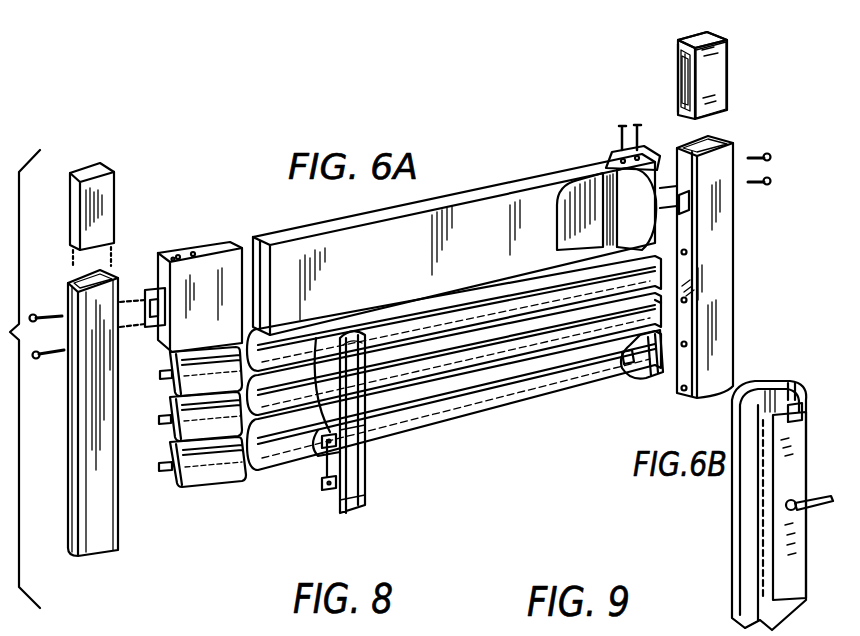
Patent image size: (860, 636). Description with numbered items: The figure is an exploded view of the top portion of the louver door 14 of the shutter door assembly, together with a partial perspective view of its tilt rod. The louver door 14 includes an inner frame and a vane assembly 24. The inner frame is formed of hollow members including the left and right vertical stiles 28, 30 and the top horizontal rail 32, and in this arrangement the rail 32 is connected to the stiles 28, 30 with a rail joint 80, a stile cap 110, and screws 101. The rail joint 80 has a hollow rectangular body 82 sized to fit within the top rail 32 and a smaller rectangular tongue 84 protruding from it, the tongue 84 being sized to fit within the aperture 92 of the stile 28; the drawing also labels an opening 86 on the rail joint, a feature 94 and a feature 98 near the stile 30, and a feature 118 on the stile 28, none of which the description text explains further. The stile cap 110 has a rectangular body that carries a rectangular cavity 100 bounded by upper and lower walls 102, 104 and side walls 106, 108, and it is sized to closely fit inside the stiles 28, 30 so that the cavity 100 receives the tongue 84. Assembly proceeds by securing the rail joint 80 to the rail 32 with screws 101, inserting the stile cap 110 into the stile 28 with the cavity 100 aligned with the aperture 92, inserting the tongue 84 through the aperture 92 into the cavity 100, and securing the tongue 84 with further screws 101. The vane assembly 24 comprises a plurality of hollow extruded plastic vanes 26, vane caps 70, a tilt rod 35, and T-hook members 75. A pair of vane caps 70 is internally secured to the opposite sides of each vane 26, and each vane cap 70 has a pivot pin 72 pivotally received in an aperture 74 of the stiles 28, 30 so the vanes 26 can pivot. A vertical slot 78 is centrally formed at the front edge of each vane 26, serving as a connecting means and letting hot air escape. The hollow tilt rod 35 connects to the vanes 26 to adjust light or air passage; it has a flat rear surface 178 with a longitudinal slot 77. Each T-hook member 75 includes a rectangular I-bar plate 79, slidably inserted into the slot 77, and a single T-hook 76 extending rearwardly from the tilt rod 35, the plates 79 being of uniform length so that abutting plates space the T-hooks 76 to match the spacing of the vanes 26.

In FIG. 6A, the louver door 14 is at (237, 186).
In FIG. 6A, the vane assembly 24 is at (461, 434).
In FIG. 6A, the vane 26 is at (601, 340).
In FIG. 6A, the left vertical stile 28 is at (95, 485).
In FIG. 6A, the right vertical stile 30 is at (717, 374).
In FIG. 6A, the top horizontal rail 32 is at (470, 200).
In FIG. 6A, the tilt rod 35 is at (366, 428).
In FIG. 6B, the tilt rod 35 is at (748, 539).
In FIG. 6A, the vane cap 70 is at (170, 435).
In FIG. 6A, the pivot pin 72 is at (161, 418).
In FIG. 6A, the aperture 74 is at (687, 343).
In FIG. 6A, the T-hook member 75 is at (352, 508).
In FIG. 6B, the T-hook member 75 is at (784, 477).
In FIG. 6A, the T-hook 76 is at (322, 484).
In FIG. 6B, the T-hook 76 is at (813, 530).
In FIG. 6A, the longitudinal slot 77 is at (353, 333).
In FIG. 6B, the longitudinal slot 77 is at (742, 608).
In FIG. 6A, the vertical slot 78 is at (340, 347).
In FIG. 6B, the I-bar plate 79 is at (790, 420).
In FIG. 6A, the rail joint 80 is at (227, 240).
In FIG. 6A, the hollow rectangular body 82 is at (612, 152).
In FIG. 6A, the tongue 84 is at (147, 287).
In FIG. 6A, the hole 86 is at (172, 257).
In FIG. 6A, the aperture 92 is at (687, 205).
In FIG. 6A, the hole 94 is at (688, 280).
In FIG. 6A, the post assembly 98 is at (733, 130).
In FIG. 6A, the cavity 100 is at (668, 65).
In FIG. 6A, the screw 101 is at (43, 312).
In FIG. 6A, the upper wall 102 is at (680, 46).
In FIG. 6A, the lower wall 104 is at (680, 100).
In FIG. 6A, the side wall 106 is at (718, 78).
In FIG. 6A, the side wall 108 is at (682, 90).
In FIG. 6A, the stile cap 110 is at (98, 197).
In FIG. 6A, the post wall 118 is at (68, 404).
In FIG. 6B, the flat rear surface 178 is at (801, 396).